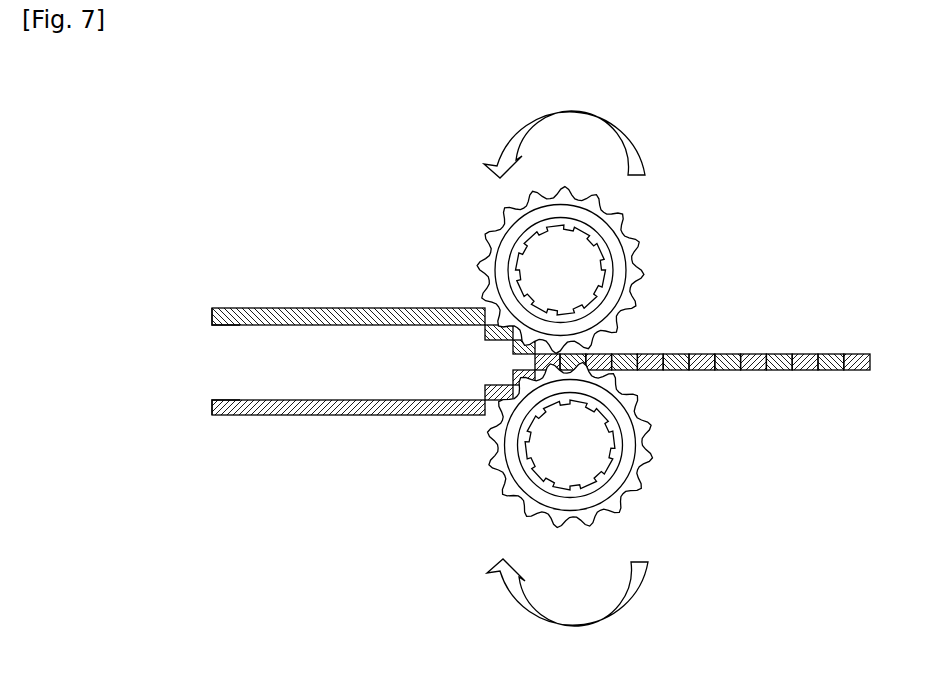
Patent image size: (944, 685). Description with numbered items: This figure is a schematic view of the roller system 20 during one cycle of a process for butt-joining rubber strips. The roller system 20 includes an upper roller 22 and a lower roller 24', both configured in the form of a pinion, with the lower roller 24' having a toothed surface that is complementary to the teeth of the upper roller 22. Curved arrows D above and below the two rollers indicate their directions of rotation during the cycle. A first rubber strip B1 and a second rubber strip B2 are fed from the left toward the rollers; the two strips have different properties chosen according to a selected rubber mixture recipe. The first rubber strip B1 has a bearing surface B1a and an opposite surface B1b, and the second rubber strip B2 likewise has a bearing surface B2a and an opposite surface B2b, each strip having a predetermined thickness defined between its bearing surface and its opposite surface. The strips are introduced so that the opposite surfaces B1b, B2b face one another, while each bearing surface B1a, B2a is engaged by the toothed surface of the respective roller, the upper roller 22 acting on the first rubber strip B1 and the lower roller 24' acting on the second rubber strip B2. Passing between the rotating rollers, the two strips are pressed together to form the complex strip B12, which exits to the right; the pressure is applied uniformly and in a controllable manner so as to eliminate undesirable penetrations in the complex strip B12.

The roller system 20 is at (673, 372).
The upper roller 22 is at (645, 220).
The lower roller 24' is at (634, 445).
The first rubber strip B1 is at (316, 264).
The bearing surface B1a is at (345, 307).
The opposite surface B1b is at (235, 325).
The second rubber strip B2 is at (316, 473).
The bearing surface B2a is at (280, 416).
The opposite surface B2b is at (235, 400).
The complex strip B12 is at (817, 353).
The arrows indicating directions of rotation D is at (566, 372).